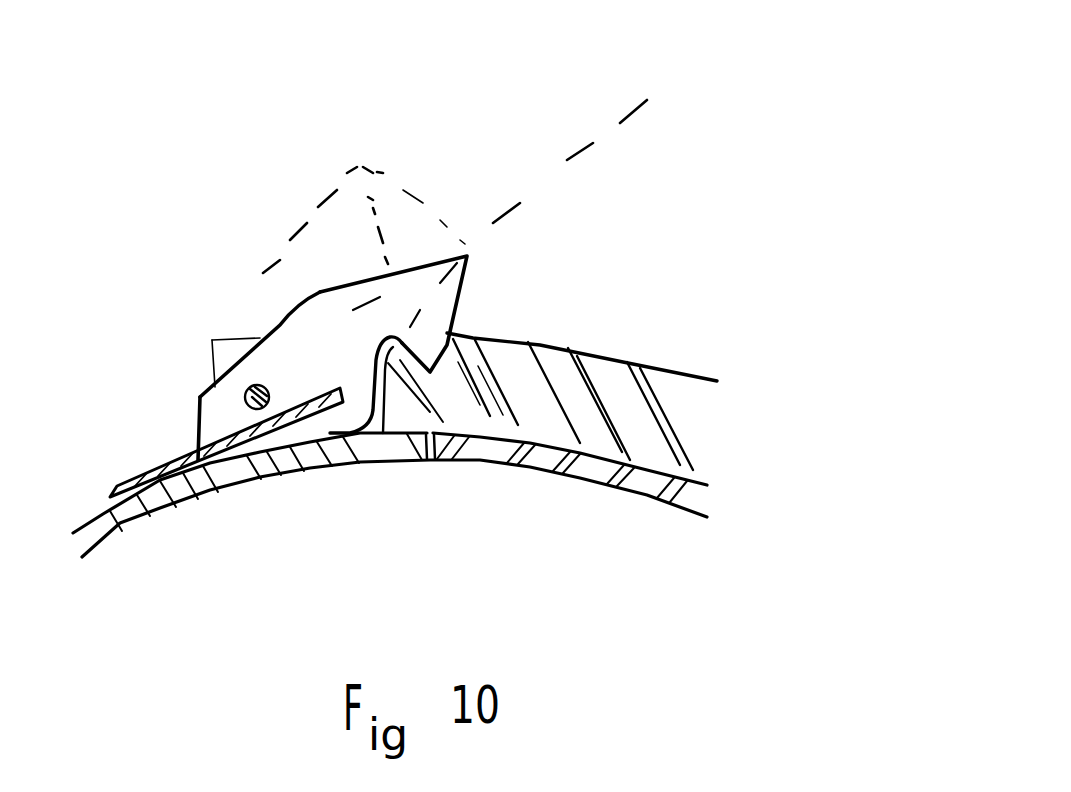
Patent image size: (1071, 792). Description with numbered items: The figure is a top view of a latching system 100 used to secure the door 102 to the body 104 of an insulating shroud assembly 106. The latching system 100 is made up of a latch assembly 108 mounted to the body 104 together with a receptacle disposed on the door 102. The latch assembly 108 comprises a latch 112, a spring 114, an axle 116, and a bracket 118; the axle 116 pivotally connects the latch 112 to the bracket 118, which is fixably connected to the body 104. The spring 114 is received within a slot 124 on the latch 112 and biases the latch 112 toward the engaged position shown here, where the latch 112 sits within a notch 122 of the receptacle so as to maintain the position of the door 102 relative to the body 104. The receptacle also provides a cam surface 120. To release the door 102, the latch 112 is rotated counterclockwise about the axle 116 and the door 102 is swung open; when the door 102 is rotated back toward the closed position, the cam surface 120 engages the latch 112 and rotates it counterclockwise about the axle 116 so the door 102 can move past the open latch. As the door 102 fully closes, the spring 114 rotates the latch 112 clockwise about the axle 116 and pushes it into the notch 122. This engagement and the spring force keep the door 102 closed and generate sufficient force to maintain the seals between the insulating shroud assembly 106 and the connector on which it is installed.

The latching system 100 is at (757, 143).
The door 102 is at (560, 512).
The body 104 is at (227, 537).
The insulating shroud assembly 106 is at (847, 625).
The latch assembly 108 is at (307, 122).
The latch 112 is at (403, 270).
The spring 114 is at (147, 473).
The axle 116 is at (248, 388).
The bracket 118 is at (233, 343).
The cam surface 120 is at (392, 410).
The notch 122 is at (450, 366).
The slot 124 is at (375, 200).